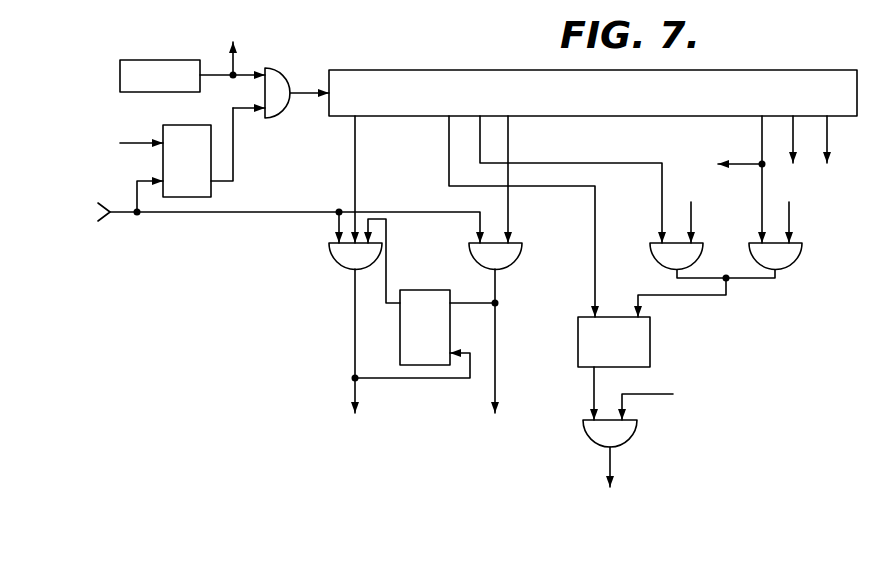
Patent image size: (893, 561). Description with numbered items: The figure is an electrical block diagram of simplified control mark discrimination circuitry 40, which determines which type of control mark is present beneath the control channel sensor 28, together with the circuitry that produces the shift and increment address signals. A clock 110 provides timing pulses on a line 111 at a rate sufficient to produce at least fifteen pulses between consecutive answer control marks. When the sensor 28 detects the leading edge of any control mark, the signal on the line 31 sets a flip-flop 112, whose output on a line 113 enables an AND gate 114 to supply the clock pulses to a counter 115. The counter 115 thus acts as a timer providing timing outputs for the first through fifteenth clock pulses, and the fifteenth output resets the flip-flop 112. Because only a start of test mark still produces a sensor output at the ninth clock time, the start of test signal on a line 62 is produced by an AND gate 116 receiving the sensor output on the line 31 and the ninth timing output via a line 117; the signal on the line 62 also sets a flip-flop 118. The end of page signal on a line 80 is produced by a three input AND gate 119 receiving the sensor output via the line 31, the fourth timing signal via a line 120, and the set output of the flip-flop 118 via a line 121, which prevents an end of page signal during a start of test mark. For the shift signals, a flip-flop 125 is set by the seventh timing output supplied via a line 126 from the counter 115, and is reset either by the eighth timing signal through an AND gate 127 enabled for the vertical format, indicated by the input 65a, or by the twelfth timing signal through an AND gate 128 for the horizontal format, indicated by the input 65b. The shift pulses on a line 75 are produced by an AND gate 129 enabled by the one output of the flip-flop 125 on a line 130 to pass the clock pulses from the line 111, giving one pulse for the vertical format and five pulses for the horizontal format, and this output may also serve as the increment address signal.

The clock 110 is at (158, 60).
The line 111 is at (245, 72).
The flip-flop 112 is at (163, 168).
The line 113 is at (233, 153).
The AND gate 114 is at (290, 70).
The counter 115 is at (485, 70).
The AND gate 116 is at (506, 270).
The line 117 is at (509, 209).
The flip-flop 118 is at (400, 331).
The three input AND gate 119 is at (333, 264).
The line 120 is at (357, 172).
The line 121 is at (387, 259).
The flip-flop 125 is at (680, 353).
The line 126 is at (597, 277).
The AND gate 127 is at (652, 250).
The AND gate 128 is at (790, 262).
The AND gate 129 is at (635, 436).
The line 130 is at (592, 389).
The control channel sensor 28 is at (61, 215).
The line 31 is at (127, 215).
The control mark discrimination circuitry 40 is at (280, 303).
The line 62 is at (497, 369).
The vertical signal input 65a is at (692, 213).
The horizontal signal input 65b is at (790, 213).
The line 75 is at (612, 466).
The line 80 is at (352, 380).